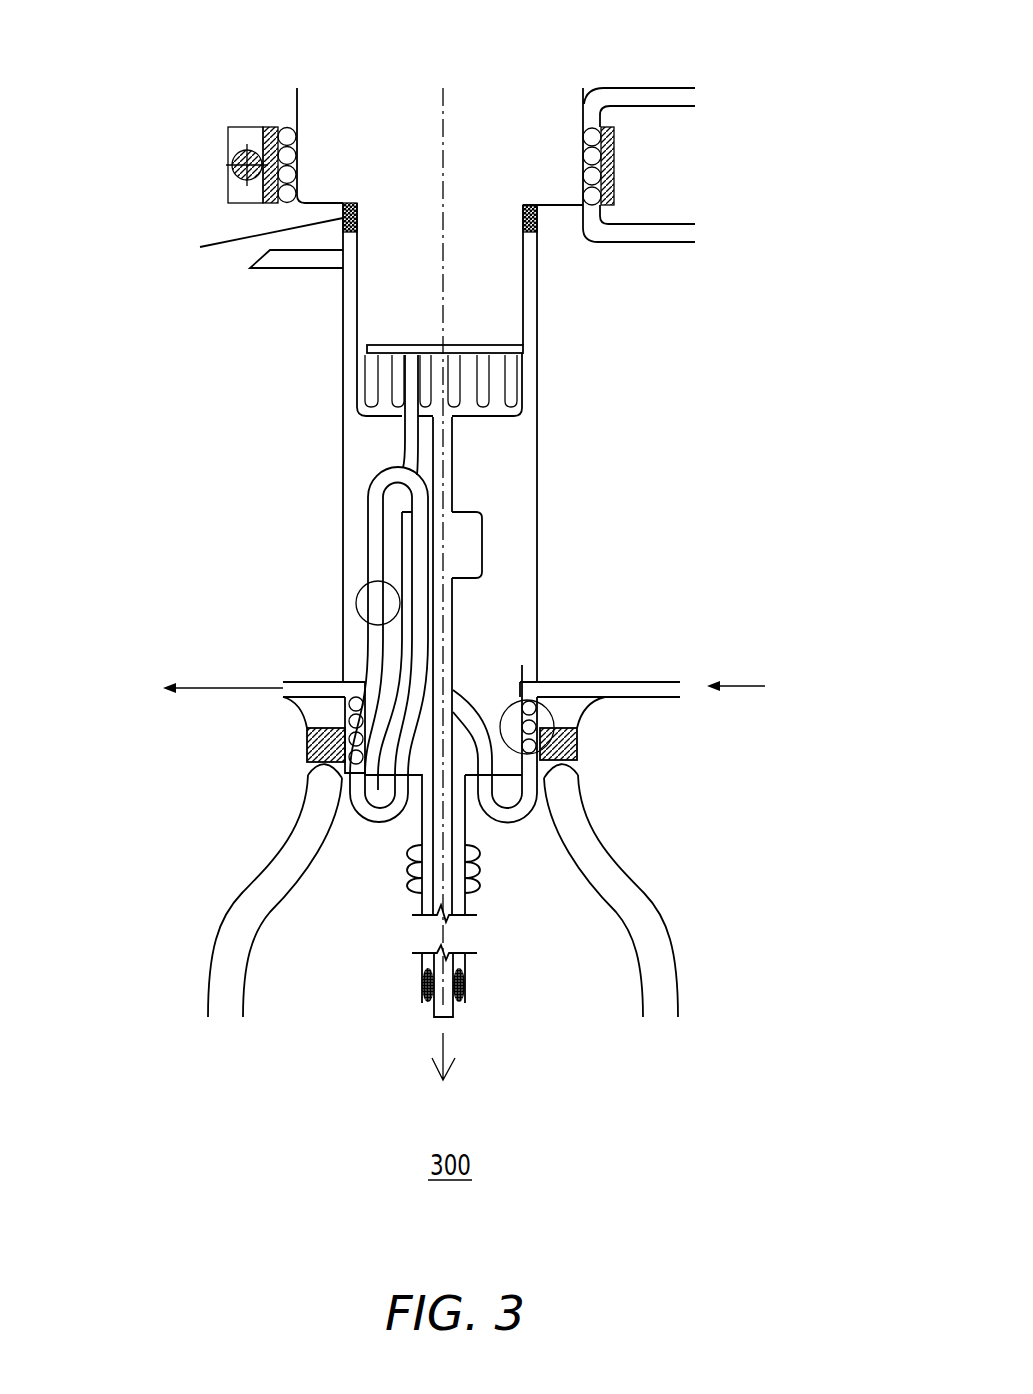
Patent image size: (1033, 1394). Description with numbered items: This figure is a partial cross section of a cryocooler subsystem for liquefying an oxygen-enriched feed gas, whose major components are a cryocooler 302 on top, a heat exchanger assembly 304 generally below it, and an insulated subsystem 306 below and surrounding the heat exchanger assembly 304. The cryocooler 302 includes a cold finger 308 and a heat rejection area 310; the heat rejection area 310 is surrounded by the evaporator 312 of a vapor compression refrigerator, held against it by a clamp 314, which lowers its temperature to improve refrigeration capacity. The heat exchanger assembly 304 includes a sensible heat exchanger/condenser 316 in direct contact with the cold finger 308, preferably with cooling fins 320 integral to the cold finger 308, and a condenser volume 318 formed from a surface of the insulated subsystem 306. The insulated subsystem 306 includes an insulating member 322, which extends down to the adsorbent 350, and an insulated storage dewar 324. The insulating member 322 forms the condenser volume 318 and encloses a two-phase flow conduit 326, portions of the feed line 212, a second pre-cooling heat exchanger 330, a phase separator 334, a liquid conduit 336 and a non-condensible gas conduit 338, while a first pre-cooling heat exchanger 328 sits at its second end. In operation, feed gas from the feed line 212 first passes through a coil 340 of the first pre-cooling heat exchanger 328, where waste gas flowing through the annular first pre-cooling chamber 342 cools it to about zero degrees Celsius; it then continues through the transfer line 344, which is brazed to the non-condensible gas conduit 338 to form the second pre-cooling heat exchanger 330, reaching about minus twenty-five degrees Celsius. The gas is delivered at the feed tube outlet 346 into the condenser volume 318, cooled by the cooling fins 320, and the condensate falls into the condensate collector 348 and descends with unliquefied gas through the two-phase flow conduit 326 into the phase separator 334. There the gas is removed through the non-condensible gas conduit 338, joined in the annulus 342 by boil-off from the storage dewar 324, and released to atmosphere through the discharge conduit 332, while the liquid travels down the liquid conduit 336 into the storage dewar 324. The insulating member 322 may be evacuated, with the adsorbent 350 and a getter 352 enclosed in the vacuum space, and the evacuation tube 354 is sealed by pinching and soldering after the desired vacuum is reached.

The feed line 212 is at (682, 698).
The cryocooler 302 is at (540, 90).
The heat exchanger assembly 304 is at (336, 503).
The insulated subsystem 306 is at (582, 602).
The cold finger 308 is at (520, 296).
The heat rejection area 310 is at (327, 108).
The evaporator 312 is at (287, 197).
The clamp 314 is at (232, 138).
The sensible heat exchanger/condenser 316 is at (350, 380).
The condenser volume 318 is at (502, 408).
The cooling fins 320 is at (512, 372).
The insulating member 322 is at (532, 667).
The insulated storage dewar 324 is at (674, 968).
The two-phase flow conduit 326 is at (452, 458).
The first pre-cooling heat exchanger 328 is at (578, 745).
The second pre-cooling heat exchanger 330 is at (362, 600).
The discharge conduit 332 is at (312, 676).
The phase separator 334 is at (477, 537).
The liquid conduit 336 is at (437, 830).
The non-condensible gas conduit 338 is at (380, 482).
The coil 340 is at (312, 738).
The annular first pre-cooling chamber 342 is at (552, 728).
The transfer line 344 is at (390, 662).
The feed tube outlet 346 is at (413, 370).
The condensate collector 348 is at (446, 433).
The adsorbent 350 is at (465, 988).
The getter 352 is at (200, 247).
The evacuation tube 354 is at (270, 260).